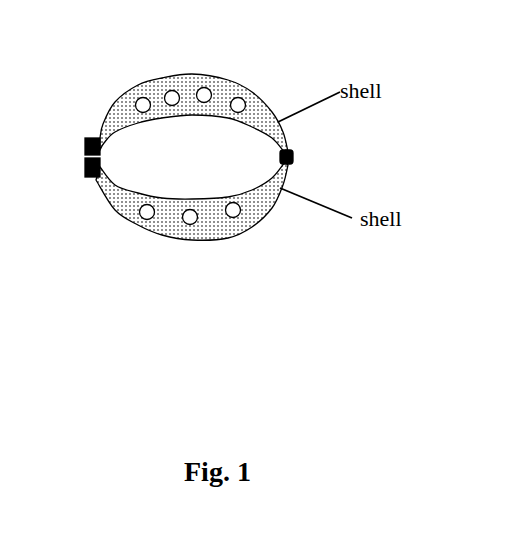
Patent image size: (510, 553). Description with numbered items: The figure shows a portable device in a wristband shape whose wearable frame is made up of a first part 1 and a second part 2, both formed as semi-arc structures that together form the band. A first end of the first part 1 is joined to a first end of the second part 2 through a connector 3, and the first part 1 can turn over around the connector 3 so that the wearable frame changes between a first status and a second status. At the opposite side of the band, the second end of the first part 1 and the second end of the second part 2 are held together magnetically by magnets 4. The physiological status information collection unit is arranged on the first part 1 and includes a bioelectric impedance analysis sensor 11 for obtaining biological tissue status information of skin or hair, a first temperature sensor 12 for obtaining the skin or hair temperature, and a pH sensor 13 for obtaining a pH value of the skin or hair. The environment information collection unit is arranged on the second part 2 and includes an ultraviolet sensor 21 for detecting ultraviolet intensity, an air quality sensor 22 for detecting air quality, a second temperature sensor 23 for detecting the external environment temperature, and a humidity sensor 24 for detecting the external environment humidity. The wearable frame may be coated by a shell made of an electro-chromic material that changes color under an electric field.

The first part 1 is at (265, 203).
The second part 2 is at (265, 108).
The connector 3 is at (291, 153).
The magnets 4 is at (94, 188).
The bioelectric impedance analysis (BIA) sensor 11 is at (141, 218).
The first temperature sensor 12 is at (188, 224).
The potential of hydrogen (pH) sensor 13 is at (233, 218).
The ultraviolet sensor 21 is at (137, 98).
The air quality sensor 22 is at (170, 92).
The second temperature sensor 23 is at (207, 89).
The humidity sensor 24 is at (243, 100).